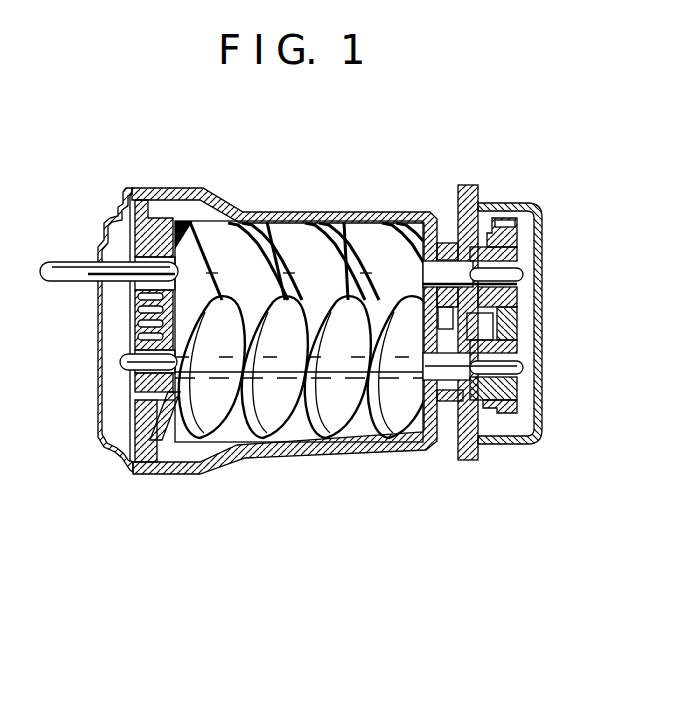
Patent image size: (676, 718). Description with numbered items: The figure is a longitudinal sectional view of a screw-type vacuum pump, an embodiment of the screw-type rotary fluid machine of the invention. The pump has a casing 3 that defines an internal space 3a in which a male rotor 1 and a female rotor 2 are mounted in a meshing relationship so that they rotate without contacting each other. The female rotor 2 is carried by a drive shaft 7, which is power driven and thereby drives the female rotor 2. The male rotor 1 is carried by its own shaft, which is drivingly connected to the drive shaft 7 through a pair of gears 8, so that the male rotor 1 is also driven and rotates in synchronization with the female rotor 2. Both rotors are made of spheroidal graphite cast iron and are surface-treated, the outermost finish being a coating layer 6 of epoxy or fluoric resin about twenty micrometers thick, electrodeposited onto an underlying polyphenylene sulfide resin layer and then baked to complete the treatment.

The male rotor 1 is at (295, 400).
The female rotor 2 is at (318, 262).
The casing 3 is at (398, 212).
The internal space 3a is at (188, 210).
The coating layer 6 is at (262, 245).
The drive shaft 7 is at (72, 262).
The pair of gears 8 is at (542, 222).